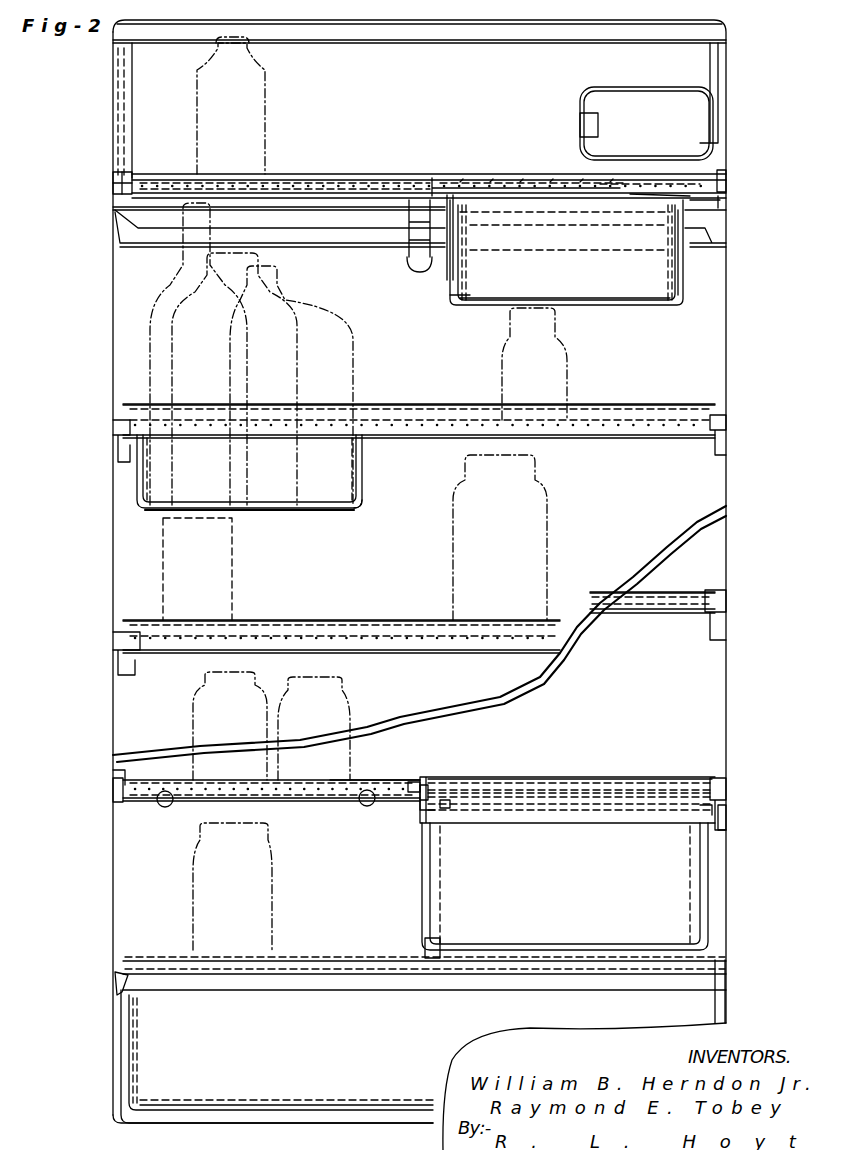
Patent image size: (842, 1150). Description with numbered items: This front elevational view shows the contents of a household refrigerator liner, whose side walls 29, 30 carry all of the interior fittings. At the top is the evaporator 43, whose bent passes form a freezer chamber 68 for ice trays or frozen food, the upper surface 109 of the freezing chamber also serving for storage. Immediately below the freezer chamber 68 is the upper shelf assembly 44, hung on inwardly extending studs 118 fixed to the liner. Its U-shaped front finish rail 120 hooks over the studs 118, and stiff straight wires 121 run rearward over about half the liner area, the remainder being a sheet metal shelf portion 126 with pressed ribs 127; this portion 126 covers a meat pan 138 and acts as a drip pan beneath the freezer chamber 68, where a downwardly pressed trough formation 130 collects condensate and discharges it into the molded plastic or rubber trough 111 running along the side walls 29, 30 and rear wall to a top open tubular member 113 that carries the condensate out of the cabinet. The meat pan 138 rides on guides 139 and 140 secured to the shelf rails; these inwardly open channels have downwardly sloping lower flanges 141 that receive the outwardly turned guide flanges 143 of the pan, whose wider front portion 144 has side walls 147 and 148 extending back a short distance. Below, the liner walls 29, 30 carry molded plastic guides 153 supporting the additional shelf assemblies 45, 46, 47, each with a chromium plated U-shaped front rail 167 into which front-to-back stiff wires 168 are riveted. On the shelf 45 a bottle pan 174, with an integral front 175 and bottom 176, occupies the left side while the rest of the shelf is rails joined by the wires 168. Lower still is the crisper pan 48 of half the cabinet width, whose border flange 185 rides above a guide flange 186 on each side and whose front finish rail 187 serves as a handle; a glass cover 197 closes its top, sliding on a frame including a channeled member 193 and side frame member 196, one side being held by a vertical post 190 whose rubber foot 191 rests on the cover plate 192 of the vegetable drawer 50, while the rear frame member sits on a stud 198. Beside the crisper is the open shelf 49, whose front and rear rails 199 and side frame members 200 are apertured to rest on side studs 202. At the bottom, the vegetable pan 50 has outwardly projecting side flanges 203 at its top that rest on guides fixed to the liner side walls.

The side wall 29 is at (114, 551).
The side wall 30 is at (726, 348).
The evaporator 43 is at (152, 104).
The upper shelf assembly 44 is at (362, 175).
The shelf assembly 45 is at (410, 405).
The shelf assembly 46 is at (135, 621).
The shelf assembly 47 is at (700, 585).
The crisper drawer 48 is at (592, 845).
The shelf 49 is at (200, 800).
The vegetable cooler drawer 50 is at (385, 1072).
The freezer chamber 68 is at (582, 112).
The upper surface of the freezing chamber 109 is at (628, 90).
The trough 111 is at (316, 231).
The tubular member 113 is at (414, 273).
The studs 118 is at (113, 186).
The front finish rail 120 is at (305, 178).
The stiff straight wires 121 is at (345, 178).
The sheet metal shelf portion 126 is at (486, 180).
The pressed ribs 127 is at (455, 182).
The downwardly pressed formation 130 is at (628, 192).
The meat pan 138 is at (630, 305).
The guide 139 is at (447, 205).
The guide 140 is at (700, 204).
The lower flanges 141 is at (462, 220).
The guide flanges 143 is at (462, 208).
The front portion 144 is at (480, 305).
The side wall 147 is at (450, 298).
The side wall 148 is at (678, 290).
The molded plastic guides 153 is at (120, 455).
The front rail 167 is at (340, 405).
The stiff wires 168 is at (395, 428).
The bottle pan 174 is at (352, 512).
The front 175 is at (360, 488).
The bottom 176 is at (250, 510).
The border flange 185 is at (700, 812).
The guide flange 186 is at (727, 812).
The front finish rail 187 is at (480, 778).
The vertical post 190 is at (424, 879).
The rubber foot 191 is at (430, 952).
The cover plate 192 is at (385, 960).
The channeled member 193 is at (420, 806).
The side frame member 196 is at (715, 780).
The glass cover 197 is at (570, 781).
The stud 198 is at (446, 808).
The front and rear rails 199 is at (370, 780).
The side frame members 200 is at (114, 778).
The side studs 202 is at (113, 793).
The side flanges 203 is at (115, 1000).